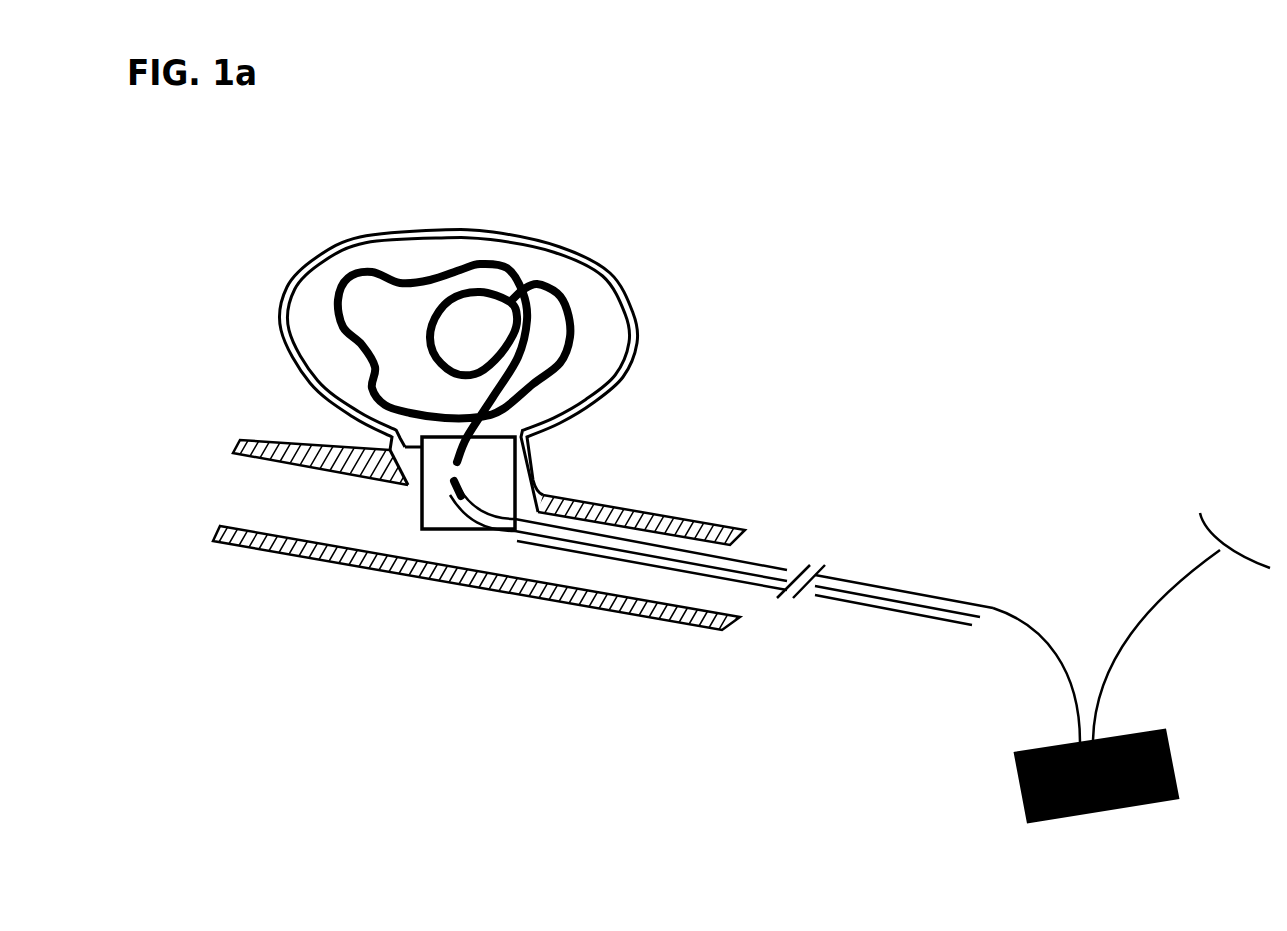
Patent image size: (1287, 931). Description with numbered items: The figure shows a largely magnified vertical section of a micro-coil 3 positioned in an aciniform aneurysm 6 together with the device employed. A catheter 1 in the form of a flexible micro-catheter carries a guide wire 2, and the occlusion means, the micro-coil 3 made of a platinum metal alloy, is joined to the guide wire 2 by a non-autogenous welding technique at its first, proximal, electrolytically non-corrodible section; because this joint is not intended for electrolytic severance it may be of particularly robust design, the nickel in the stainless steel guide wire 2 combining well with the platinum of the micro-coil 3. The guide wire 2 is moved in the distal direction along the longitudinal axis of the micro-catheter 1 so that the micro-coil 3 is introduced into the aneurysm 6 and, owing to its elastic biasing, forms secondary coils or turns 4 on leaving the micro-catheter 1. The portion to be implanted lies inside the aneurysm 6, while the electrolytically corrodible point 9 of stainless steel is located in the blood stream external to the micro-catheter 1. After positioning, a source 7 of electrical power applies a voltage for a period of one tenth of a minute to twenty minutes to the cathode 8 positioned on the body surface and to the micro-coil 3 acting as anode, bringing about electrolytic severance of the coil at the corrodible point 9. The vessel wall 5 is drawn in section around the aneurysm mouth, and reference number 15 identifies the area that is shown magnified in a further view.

The catheter 1 is at (925, 593).
The guide wire 2 is at (850, 594).
The micro-coil 3 is at (517, 535).
The secondary coils or turns 4 is at (508, 253).
The blood vessel wall 5 is at (367, 573).
The aneurysm 6 is at (620, 285).
The source of electrical power 7 is at (1170, 733).
The cathode 8 is at (1220, 548).
The electrolytically corrodible point 9 is at (460, 470).
The area shown magnified 15 is at (352, 418).